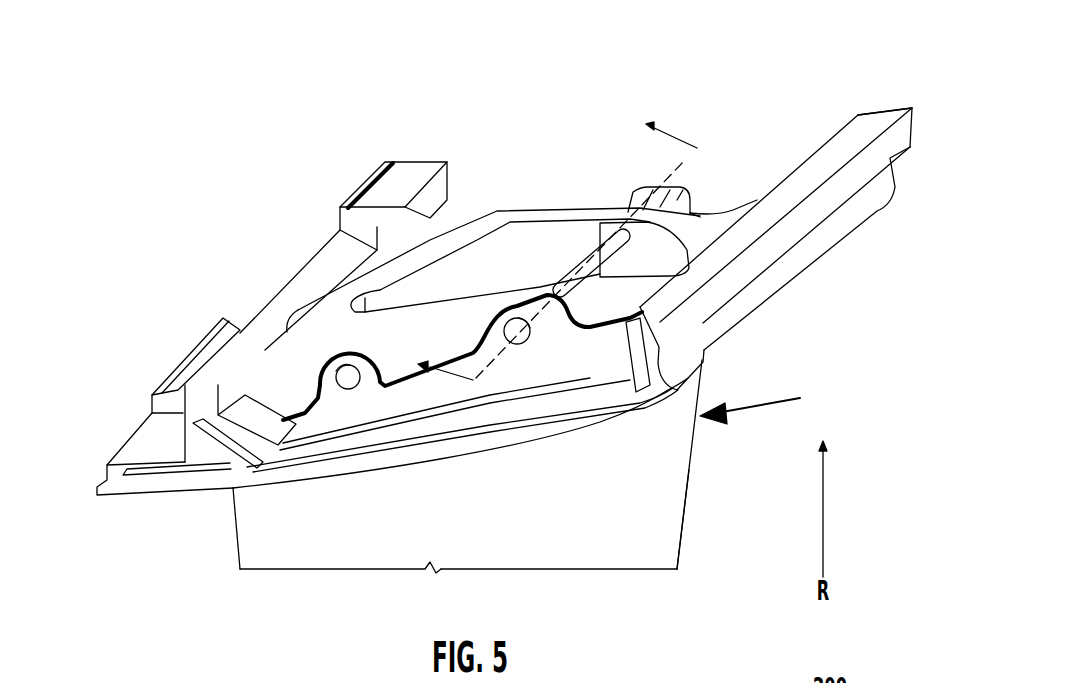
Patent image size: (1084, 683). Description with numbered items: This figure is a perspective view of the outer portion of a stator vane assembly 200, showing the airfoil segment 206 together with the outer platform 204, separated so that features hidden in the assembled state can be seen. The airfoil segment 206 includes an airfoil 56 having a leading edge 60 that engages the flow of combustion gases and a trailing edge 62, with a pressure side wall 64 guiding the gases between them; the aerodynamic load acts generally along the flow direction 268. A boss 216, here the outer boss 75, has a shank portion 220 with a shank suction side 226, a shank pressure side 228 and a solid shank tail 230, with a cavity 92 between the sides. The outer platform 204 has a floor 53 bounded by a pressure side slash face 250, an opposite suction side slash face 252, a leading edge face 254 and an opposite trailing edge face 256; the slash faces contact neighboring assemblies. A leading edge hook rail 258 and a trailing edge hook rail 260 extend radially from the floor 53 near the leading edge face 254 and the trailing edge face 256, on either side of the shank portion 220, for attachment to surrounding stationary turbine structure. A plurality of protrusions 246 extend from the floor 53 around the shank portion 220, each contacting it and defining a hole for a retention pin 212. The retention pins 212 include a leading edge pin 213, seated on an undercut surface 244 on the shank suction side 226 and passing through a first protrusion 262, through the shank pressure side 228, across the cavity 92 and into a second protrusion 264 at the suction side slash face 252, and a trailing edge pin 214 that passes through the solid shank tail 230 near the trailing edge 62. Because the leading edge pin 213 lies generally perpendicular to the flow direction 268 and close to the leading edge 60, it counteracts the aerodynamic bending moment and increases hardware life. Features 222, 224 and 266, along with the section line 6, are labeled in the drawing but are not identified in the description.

The stator vane assembly 200 is at (788, 80).
The outer platform 204 is at (931, 94).
The airfoil segment 206 is at (730, 478).
The retention pin 212 is at (410, 223).
The leading edge pin 213 is at (600, 273).
The trailing edge pin 214 is at (318, 358).
The boss 216 is at (308, 252).
The outer boss 75 is at (345, 262).
The shank portion 220 is at (407, 222).
The cavity 92 is at (441, 256).
The elongated beam bar 222 is at (757, 240).
The bushing 224 is at (337, 364).
The shank suction side 226 is at (481, 215).
The shank pressure side 228 is at (398, 317).
The solid shank tail 230 is at (360, 323).
The undercut surface 244 is at (565, 183).
The protrusions 246 is at (633, 188).
The first protrusion 262 is at (537, 295).
The left rim end tab 266 is at (338, 362).
The pressure side slash face 250 is at (512, 442).
The suction side slash face 252 is at (737, 210).
The leading edge face 254 is at (757, 301).
The trailing edge face 256 is at (150, 427).
The leading edge hook rail 258 is at (882, 158).
The trailing edge hook rail 260 is at (193, 358).
The second protrusion 264 is at (678, 194).
The flow direction 268 is at (783, 398).
The floor 53 is at (612, 365).
The airfoil 56 is at (340, 547).
The leading edge 60 is at (685, 528).
The trailing edge 62 is at (237, 543).
The pressure side wall 64 is at (560, 550).
The section line 6- 6 is at (697, 148).